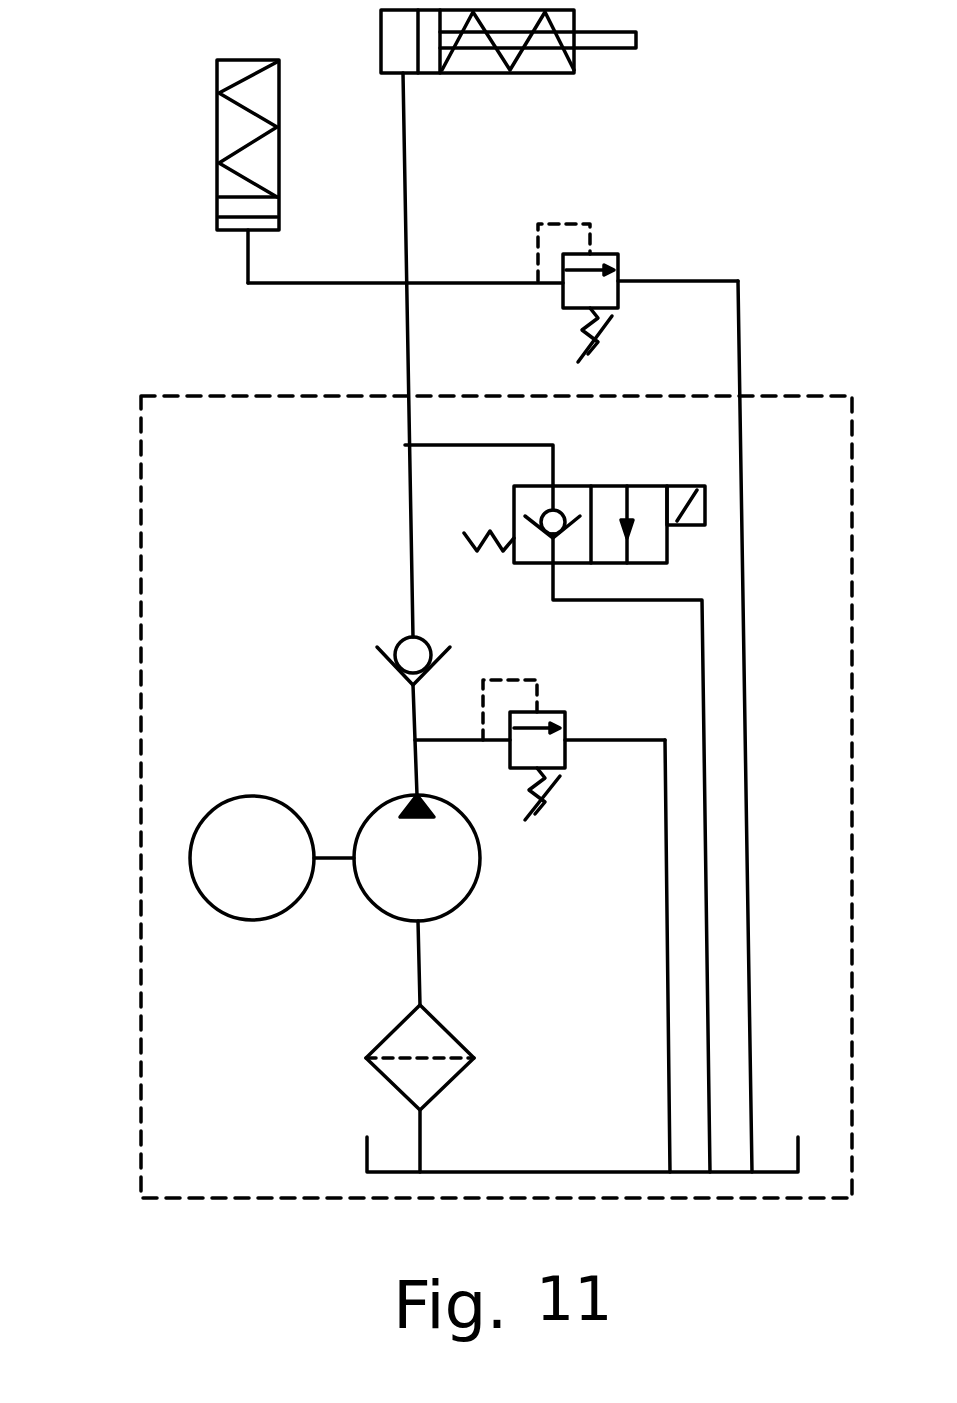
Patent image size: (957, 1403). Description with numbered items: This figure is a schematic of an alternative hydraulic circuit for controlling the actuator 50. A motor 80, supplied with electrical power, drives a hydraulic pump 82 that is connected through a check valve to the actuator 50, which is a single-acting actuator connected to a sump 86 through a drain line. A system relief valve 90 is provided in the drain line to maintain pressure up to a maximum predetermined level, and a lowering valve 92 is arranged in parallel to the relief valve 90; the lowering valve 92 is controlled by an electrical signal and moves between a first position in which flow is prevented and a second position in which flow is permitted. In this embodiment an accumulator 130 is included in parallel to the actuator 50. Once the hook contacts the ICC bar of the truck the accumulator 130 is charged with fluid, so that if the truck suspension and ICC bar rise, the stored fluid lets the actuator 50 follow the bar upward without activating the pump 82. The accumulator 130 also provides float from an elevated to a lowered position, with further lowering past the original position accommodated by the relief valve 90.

The actuator 50 is at (490, 75).
The accumulator 130 is at (217, 163).
The system relief valve 90 is at (618, 252).
The lowering valve 92 is at (607, 485).
The motor 80 is at (250, 812).
The hydraulic pump 82 is at (440, 880).
The sump 86 is at (547, 1166).